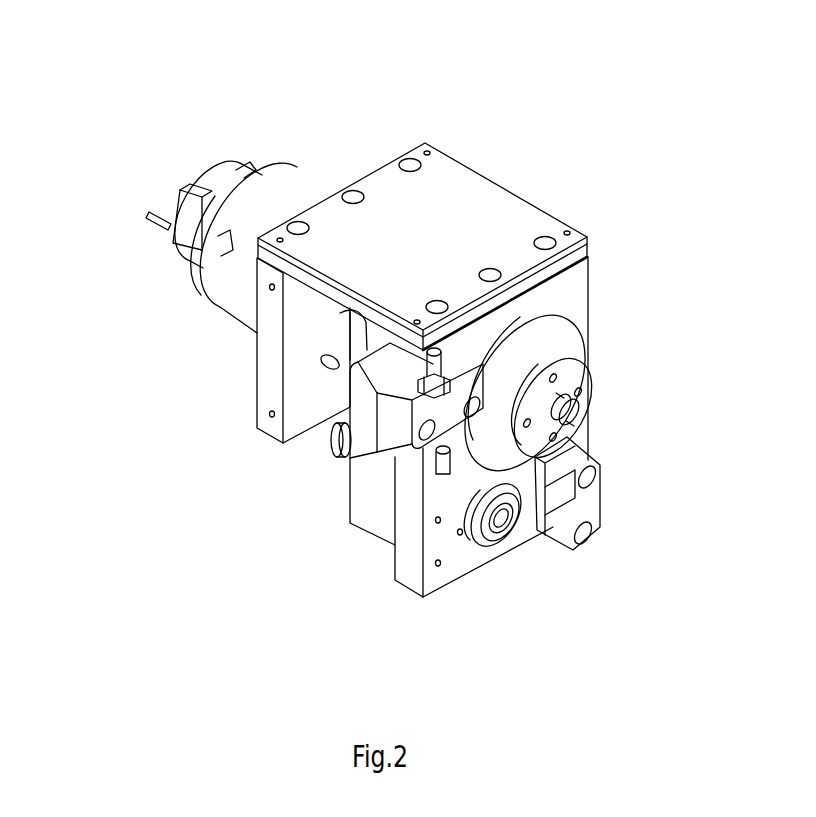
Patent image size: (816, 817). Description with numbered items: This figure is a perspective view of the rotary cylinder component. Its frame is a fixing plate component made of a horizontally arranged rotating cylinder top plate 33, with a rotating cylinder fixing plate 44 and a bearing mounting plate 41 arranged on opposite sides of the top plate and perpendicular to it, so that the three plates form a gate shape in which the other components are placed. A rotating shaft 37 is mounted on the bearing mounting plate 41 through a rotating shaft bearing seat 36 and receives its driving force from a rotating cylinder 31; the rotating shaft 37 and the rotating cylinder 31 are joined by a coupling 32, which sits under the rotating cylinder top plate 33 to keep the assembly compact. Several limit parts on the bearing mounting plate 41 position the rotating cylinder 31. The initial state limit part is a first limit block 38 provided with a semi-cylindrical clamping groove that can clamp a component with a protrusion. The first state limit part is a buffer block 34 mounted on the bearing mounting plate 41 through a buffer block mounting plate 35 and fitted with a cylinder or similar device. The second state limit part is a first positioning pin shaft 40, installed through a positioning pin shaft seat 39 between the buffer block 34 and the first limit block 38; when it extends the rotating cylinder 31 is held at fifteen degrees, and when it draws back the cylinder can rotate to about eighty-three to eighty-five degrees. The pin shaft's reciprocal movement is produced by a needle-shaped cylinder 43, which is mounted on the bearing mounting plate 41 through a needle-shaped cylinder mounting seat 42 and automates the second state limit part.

The rotating cylinder 31 is at (222, 175).
The coupling 32 is at (338, 290).
The rotating cylinder top plate 33 is at (392, 200).
The buffer block 34 is at (438, 308).
The buffer block mounting plate 35 is at (462, 365).
The rotating shaft bearing seat 36 is at (514, 328).
The rotating shaft 37 is at (565, 377).
The first limit block 38 is at (585, 512).
The positioning pin shaft seat 39 is at (513, 527).
The first positioning pin shaft 40 is at (497, 520).
The bearing mounting plate 41 is at (410, 550).
The needle-shaped cylinder mounting seat 42 is at (377, 518).
The needle-shaped cylinder 43 is at (340, 460).
The rotating cylinder fixing plate 44 is at (273, 355).